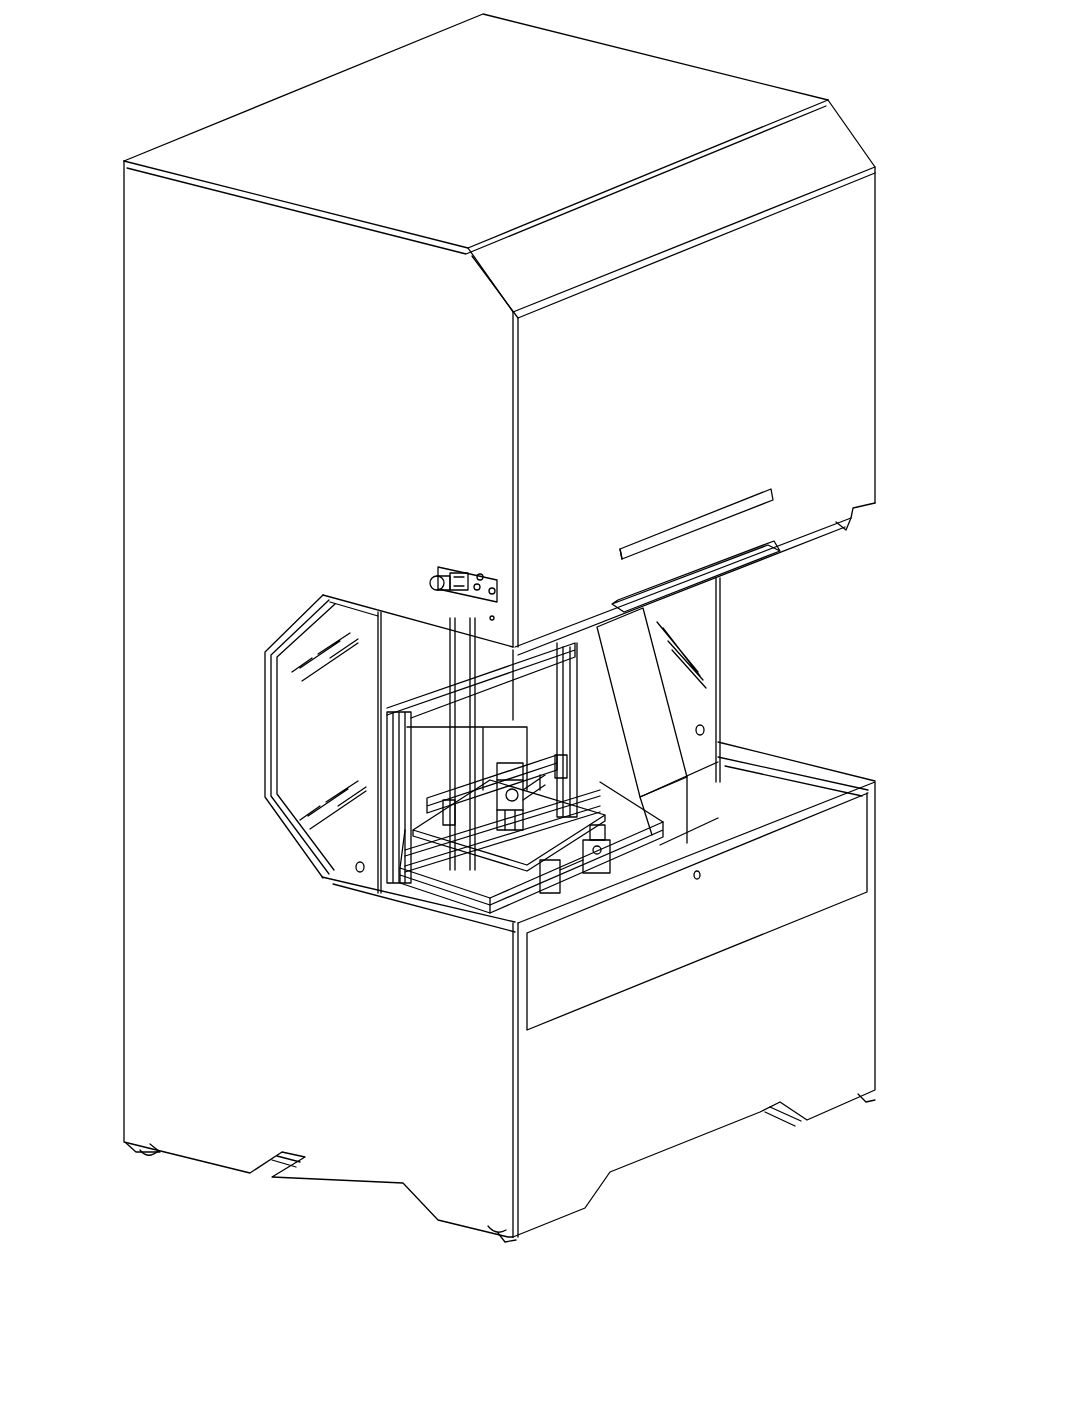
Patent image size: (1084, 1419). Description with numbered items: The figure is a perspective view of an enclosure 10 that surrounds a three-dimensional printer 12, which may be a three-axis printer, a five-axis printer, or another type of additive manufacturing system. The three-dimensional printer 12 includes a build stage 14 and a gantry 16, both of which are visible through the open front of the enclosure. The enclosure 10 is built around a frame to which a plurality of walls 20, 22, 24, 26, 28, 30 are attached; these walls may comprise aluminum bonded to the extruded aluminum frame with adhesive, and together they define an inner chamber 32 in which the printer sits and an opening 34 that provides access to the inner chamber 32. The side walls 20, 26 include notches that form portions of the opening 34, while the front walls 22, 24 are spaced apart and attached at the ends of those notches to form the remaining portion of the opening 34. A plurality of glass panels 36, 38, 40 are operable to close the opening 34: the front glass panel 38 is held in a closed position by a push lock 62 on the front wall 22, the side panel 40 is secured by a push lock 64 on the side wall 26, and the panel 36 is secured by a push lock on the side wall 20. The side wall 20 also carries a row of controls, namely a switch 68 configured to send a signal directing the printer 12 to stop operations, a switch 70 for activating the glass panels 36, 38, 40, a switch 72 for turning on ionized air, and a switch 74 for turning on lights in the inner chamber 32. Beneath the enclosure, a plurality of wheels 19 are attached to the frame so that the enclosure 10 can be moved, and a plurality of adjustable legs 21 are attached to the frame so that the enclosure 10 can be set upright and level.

The enclosure 10 is at (760, 44).
The three-dimensional printer 12 is at (668, 777).
The build stage 14 is at (686, 843).
The gantry 16 is at (648, 668).
The wheels 19 is at (152, 1160).
The side wall 20 is at (148, 336).
The adjustable legs 21 is at (866, 1096).
The front wall 22 is at (862, 263).
The front wall 24 is at (860, 1000).
The side wall 26 is at (772, 749).
The wall 28 is at (125, 213).
The wall 30 is at (331, 84).
The inner chamber 32 is at (573, 866).
The opening 34 is at (430, 910).
The glass panel 36 is at (326, 751).
The front glass panel 38 is at (840, 527).
The side panel 40 is at (708, 604).
The push lock 62 is at (697, 551).
The push lock 64 is at (492, 618).
The switch 68 is at (433, 579).
The switch 70 is at (456, 568).
The switch 72 is at (480, 572).
The switch 74 is at (500, 590).